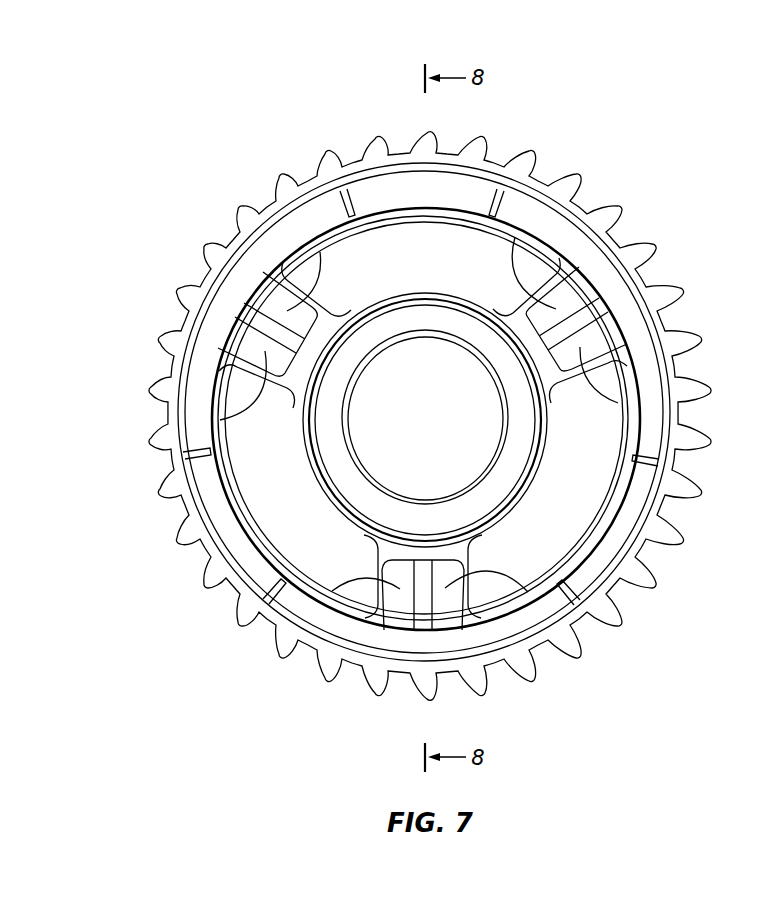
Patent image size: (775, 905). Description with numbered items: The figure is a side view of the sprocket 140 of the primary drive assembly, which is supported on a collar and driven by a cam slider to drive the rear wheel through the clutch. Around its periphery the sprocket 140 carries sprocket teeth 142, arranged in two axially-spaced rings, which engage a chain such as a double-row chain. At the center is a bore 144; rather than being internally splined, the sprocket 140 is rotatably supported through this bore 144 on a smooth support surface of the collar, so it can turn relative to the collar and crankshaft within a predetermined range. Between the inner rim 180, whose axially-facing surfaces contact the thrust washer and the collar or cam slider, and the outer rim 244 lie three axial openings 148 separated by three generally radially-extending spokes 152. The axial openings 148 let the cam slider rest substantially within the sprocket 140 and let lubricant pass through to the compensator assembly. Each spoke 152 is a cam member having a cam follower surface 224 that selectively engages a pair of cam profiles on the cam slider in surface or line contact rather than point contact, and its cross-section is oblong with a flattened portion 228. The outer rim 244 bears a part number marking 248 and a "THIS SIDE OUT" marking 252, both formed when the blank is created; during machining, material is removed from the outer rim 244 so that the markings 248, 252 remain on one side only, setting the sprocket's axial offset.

The sprocket 140 is at (136, 693).
The sprocket teeth 142 is at (185, 285).
The bore 144 is at (497, 385).
The axial openings 148 is at (352, 600).
The spokes 152 is at (525, 585).
The inner rim 180 is at (550, 340).
The cam follower surface 224 is at (370, 583).
The flattened portion 228 is at (422, 582).
The outer rim 244 is at (320, 222).
The part number marking 248 is at (442, 176).
The "THIS SIDE OUT" marking 252 is at (195, 521).